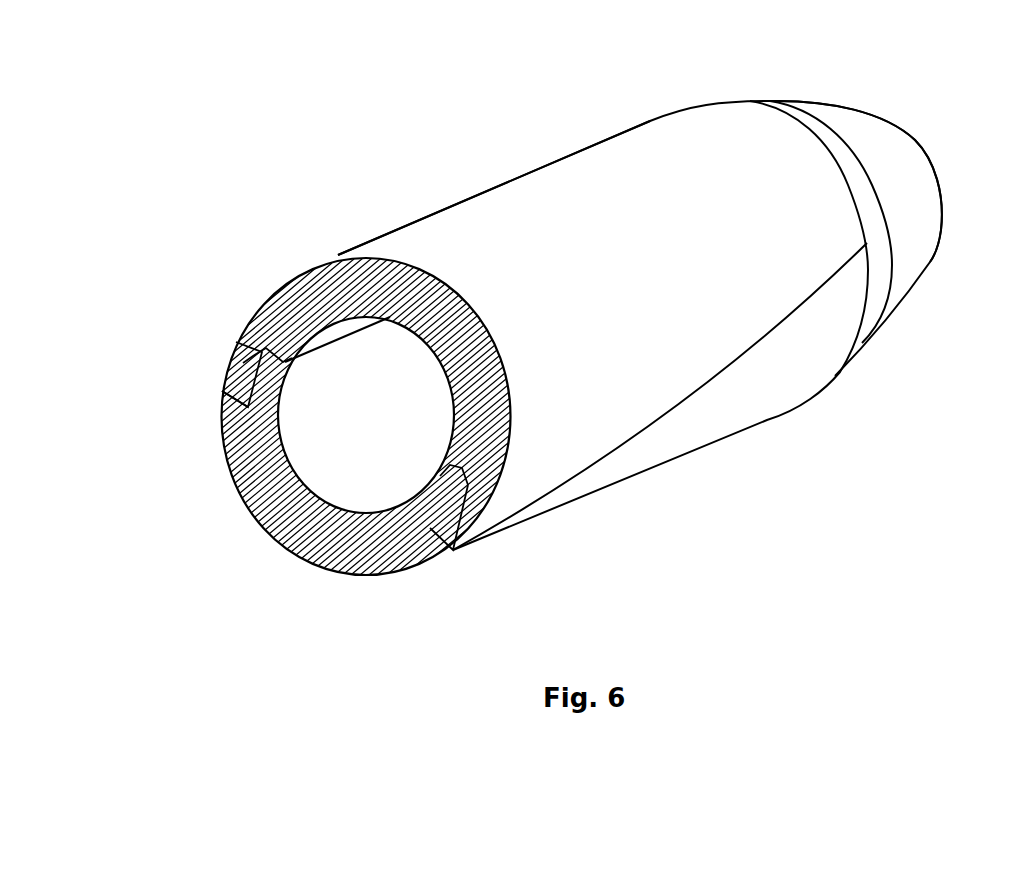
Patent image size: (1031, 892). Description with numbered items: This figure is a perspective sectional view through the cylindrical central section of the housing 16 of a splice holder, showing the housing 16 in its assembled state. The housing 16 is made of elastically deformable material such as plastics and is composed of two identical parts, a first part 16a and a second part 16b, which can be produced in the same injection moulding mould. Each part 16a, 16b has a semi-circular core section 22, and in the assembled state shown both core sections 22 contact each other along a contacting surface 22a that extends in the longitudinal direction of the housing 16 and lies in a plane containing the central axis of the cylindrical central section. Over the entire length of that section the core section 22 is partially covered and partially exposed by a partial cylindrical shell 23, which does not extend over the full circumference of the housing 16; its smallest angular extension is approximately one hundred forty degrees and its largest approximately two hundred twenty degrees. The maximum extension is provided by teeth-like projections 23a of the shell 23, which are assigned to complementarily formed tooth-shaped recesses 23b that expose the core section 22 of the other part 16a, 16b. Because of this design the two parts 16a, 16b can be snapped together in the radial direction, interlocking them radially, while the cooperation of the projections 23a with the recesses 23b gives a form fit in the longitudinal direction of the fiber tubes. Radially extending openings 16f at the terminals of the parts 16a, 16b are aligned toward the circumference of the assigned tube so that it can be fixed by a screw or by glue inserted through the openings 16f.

The housing 16 is at (420, 130).
The first part 16a is at (420, 236).
The second part 16b is at (233, 487).
The radially extending opening 16f is at (930, 266).
The core section 22 is at (248, 404).
The contacting surface 22a is at (282, 348).
The partial cylindrical shell 23 is at (232, 375).
The teeth-like projection 23a is at (470, 522).
The tooth-shaped recess 23b is at (862, 258).